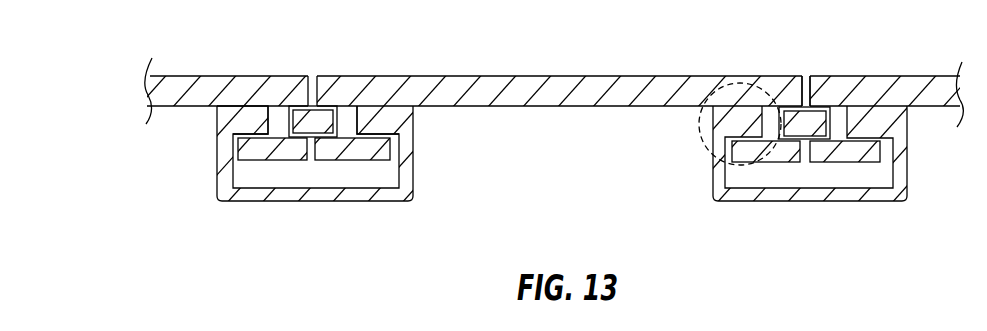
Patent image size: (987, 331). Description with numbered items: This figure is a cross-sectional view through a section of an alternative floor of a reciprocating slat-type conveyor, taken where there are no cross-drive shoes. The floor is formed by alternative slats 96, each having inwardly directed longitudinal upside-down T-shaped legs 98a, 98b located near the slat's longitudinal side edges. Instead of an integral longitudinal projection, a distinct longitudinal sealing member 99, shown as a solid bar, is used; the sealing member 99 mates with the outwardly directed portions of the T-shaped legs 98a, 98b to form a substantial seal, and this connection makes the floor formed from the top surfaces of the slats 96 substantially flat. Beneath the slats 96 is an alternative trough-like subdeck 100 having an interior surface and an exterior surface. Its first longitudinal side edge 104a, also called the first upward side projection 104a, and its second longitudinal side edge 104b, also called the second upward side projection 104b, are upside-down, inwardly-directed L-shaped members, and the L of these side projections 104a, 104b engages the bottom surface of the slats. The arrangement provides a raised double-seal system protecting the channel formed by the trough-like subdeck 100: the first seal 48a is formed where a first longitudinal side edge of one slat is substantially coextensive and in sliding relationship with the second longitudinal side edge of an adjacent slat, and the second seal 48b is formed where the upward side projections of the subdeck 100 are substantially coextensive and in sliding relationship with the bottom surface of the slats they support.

The slat 96 is at (210, 92).
The longitudinal sealing member 99 is at (322, 118).
The subdeck 100 is at (413, 163).
The first longitudinal side edge 104a is at (412, 115).
The second longitudinal side edge 104b is at (226, 120).
The T-shaped leg 98a is at (337, 163).
The T-shaped leg 98b is at (265, 163).
The first seal 48a is at (805, 77).
The second seal 48b is at (706, 136).